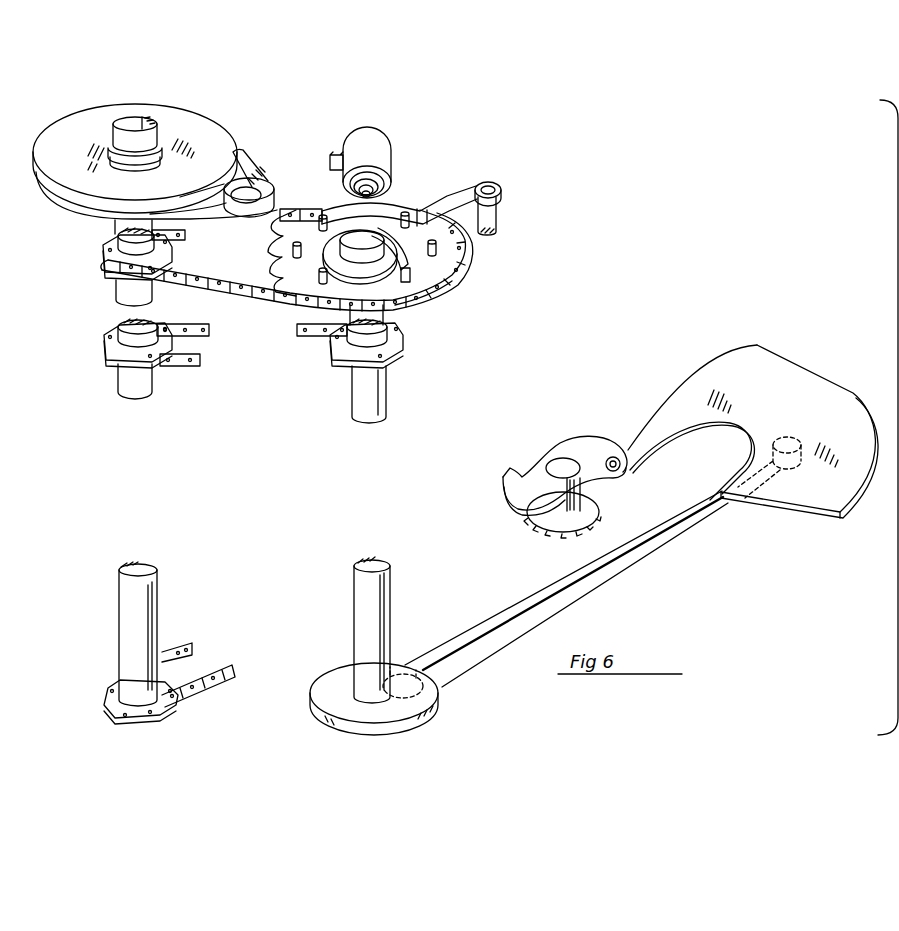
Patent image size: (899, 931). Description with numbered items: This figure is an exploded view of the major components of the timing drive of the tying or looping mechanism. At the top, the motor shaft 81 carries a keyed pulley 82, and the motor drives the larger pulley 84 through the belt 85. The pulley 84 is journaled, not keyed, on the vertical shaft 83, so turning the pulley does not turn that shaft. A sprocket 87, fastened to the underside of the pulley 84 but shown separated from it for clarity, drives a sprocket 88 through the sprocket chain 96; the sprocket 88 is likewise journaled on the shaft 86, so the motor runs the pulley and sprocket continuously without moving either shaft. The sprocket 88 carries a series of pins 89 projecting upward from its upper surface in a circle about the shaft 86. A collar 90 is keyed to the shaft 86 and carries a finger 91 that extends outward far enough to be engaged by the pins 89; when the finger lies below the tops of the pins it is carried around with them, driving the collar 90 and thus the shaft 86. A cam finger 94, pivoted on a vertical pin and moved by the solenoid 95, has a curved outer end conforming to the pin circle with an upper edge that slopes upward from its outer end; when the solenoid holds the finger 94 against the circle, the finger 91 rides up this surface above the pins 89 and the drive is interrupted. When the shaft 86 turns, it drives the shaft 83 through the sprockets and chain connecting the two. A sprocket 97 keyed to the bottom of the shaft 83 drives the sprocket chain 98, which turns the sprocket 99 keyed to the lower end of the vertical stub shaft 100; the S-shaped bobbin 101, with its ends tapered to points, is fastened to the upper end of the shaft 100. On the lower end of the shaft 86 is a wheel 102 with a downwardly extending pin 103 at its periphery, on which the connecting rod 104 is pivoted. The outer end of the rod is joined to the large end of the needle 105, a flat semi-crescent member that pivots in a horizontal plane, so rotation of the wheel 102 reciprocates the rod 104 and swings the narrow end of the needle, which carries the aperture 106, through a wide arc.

The shaft 81 is at (255, 200).
The pulley 82 is at (253, 216).
The shaft 83 is at (128, 382).
The pulley 84 is at (212, 143).
The belt 85 is at (240, 170).
The shaft 86 is at (367, 387).
The sprocket 87 is at (160, 264).
The sprocket 88 is at (303, 277).
The pins 89 is at (410, 269).
The collar 90 is at (358, 265).
The finger 91 is at (450, 306).
The cam finger 94 is at (440, 207).
The solenoid 95 is at (368, 145).
The sprocket chain 96 is at (250, 296).
The sprocket 97 is at (175, 695).
The sprocket chain 98 is at (212, 685).
The sprocket 99 is at (583, 500).
The stub shaft 100 is at (562, 510).
The bobbin 101 is at (587, 448).
The wheel 102 is at (397, 713).
The pin 103 is at (423, 688).
The connecting rod 104 is at (562, 593).
The needle 105 is at (780, 383).
The aperture 106 is at (624, 466).